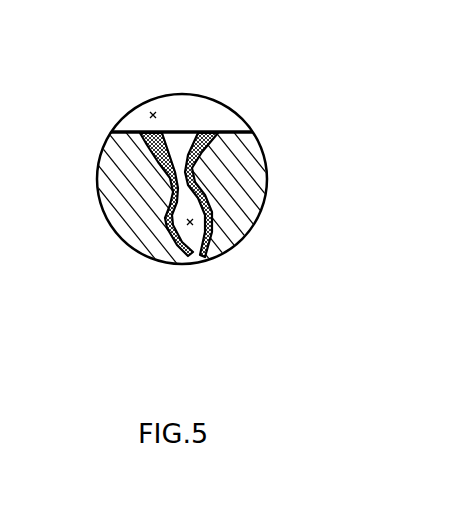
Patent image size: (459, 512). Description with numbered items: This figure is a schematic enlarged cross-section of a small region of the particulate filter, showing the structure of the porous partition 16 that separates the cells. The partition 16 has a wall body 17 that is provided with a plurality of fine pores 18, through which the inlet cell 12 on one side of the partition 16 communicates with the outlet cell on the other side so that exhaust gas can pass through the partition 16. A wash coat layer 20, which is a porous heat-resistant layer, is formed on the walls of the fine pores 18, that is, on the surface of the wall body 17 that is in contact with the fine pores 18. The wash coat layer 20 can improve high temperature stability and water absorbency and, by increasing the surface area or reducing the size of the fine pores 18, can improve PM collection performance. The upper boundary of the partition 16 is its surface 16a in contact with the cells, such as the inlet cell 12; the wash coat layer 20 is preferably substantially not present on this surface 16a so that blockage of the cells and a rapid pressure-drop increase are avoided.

The inlet cell 12 is at (152, 113).
The partition 16 is at (225, 131).
The surface of the partition 16a is at (130, 132).
The wall body 17 is at (247, 168).
The fine pores 18 is at (190, 227).
The wash coat layer 20 is at (162, 143).